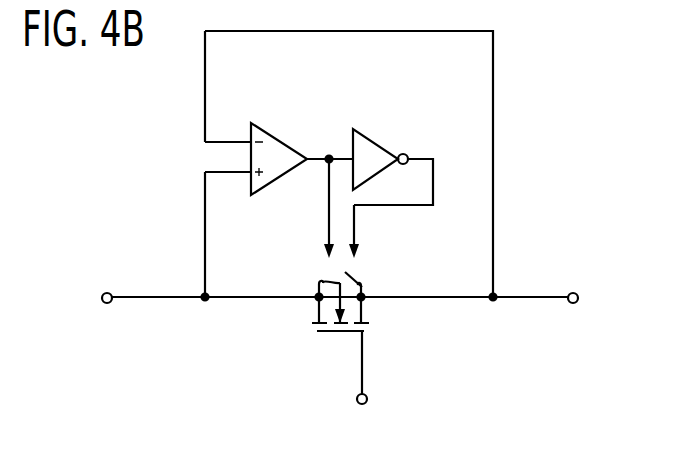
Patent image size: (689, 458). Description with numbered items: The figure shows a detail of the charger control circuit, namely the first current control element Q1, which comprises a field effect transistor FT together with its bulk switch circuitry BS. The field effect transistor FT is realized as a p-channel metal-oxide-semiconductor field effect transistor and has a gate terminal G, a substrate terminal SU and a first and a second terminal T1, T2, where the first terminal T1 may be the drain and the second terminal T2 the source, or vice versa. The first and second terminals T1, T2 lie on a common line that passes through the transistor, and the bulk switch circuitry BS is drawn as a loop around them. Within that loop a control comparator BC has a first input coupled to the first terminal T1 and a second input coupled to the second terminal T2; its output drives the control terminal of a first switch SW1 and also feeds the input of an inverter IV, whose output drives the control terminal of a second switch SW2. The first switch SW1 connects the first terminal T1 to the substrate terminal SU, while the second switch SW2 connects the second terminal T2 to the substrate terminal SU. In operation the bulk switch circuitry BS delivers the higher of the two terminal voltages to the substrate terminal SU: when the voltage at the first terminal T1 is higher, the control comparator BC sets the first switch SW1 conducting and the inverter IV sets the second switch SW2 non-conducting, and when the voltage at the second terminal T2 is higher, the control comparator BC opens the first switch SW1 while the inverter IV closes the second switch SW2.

The first current control element Q1 is at (155, 152).
The bulk switch circuitry BS is at (505, 175).
The control comparator BC is at (273, 136).
The inverter IV is at (376, 142).
The first switch SW1 is at (322, 282).
The second switch SW2 is at (350, 274).
The substrate terminal SU is at (355, 284).
The first terminal T1 is at (318, 312).
The second terminal T2 is at (363, 312).
The field effect transistor FT is at (328, 333).
The gate terminal G is at (368, 398).